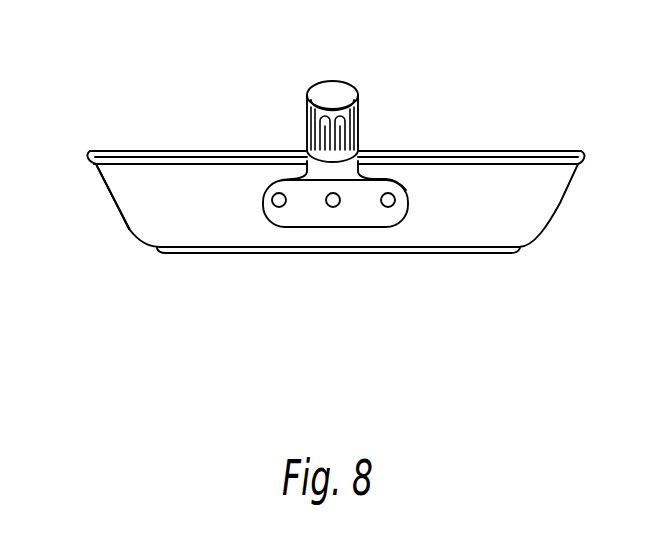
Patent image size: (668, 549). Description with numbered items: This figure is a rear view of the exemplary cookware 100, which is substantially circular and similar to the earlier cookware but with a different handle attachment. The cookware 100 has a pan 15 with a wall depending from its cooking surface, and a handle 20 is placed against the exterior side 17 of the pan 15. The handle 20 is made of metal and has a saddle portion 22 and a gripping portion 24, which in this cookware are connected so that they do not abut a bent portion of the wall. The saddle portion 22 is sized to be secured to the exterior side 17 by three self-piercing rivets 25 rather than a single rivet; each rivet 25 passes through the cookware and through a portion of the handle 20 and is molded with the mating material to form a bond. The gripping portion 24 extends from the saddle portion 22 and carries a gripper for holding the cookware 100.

The cookware 100 is at (512, 75).
The pan 15 is at (549, 192).
The exterior side 17 is at (130, 188).
The handle 20 is at (345, 95).
The gripping portion 24 is at (356, 121).
The saddle portion 22 is at (357, 212).
The self-piercing rivet 25 is at (272, 200).